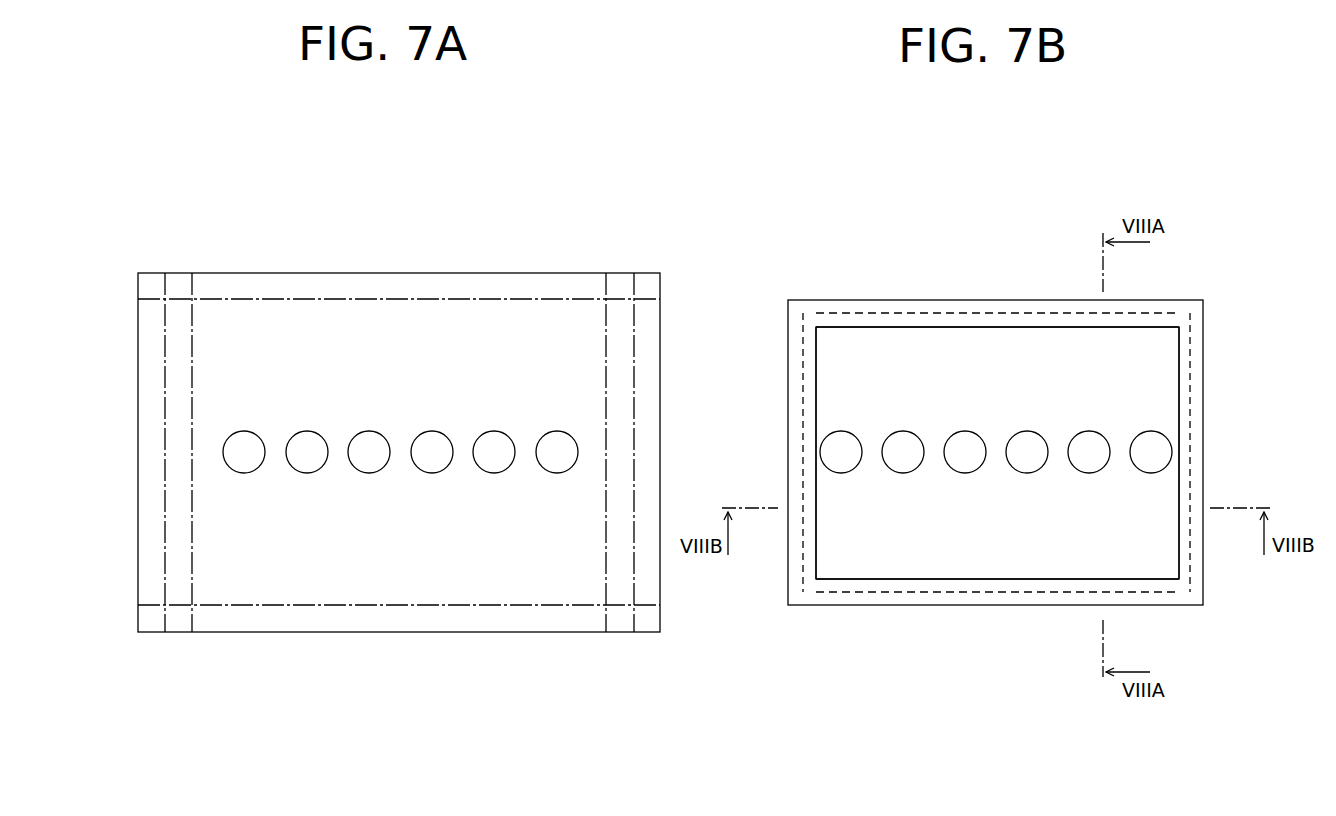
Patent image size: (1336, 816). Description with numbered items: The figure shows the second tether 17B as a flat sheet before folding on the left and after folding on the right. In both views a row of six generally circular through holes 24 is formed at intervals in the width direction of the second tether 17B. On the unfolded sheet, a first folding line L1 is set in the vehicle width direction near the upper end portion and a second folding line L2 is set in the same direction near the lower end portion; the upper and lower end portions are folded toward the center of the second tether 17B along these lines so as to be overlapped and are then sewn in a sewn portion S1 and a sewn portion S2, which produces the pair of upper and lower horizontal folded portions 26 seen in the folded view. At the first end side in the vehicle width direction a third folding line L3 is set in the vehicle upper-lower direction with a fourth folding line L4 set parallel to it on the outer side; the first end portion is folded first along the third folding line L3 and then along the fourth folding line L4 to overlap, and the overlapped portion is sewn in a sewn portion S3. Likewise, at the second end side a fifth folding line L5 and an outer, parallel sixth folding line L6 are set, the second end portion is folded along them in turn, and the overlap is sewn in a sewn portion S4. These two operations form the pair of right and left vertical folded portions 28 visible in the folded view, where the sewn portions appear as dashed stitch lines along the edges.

In FIG. 7A, the second tether 17B is at (571, 272).
In FIG. 7B, the second tether 17B is at (1010, 298).
In FIG. 7A, the through holes 24 is at (310, 470).
In FIG. 7B, the through holes 24 is at (858, 463).
In FIG. 7B, the horizontal folded portions 26 is at (845, 306).
In FIG. 7B, the vertical folded portions 28 is at (803, 422).
In FIG. 7A, the first folding line L1 is at (294, 299).
In FIG. 7A, the second folding line L2 is at (467, 605).
In FIG. 7A, the third folding line L3 is at (606, 350).
In FIG. 7A, the fourth folding line L4 is at (634, 384).
In FIG. 7A, the fifth folding line L5 is at (192, 360).
In FIG. 7A, the sixth folding line L6 is at (165, 472).
In FIG. 7B, the sewn portion S1 is at (922, 312).
In FIG. 7B, the sewn portion S2 is at (1025, 592).
In FIG. 7B, the sewn portion S3 is at (1190, 380).
In FIG. 7B, the sewn portion S4 is at (803, 462).